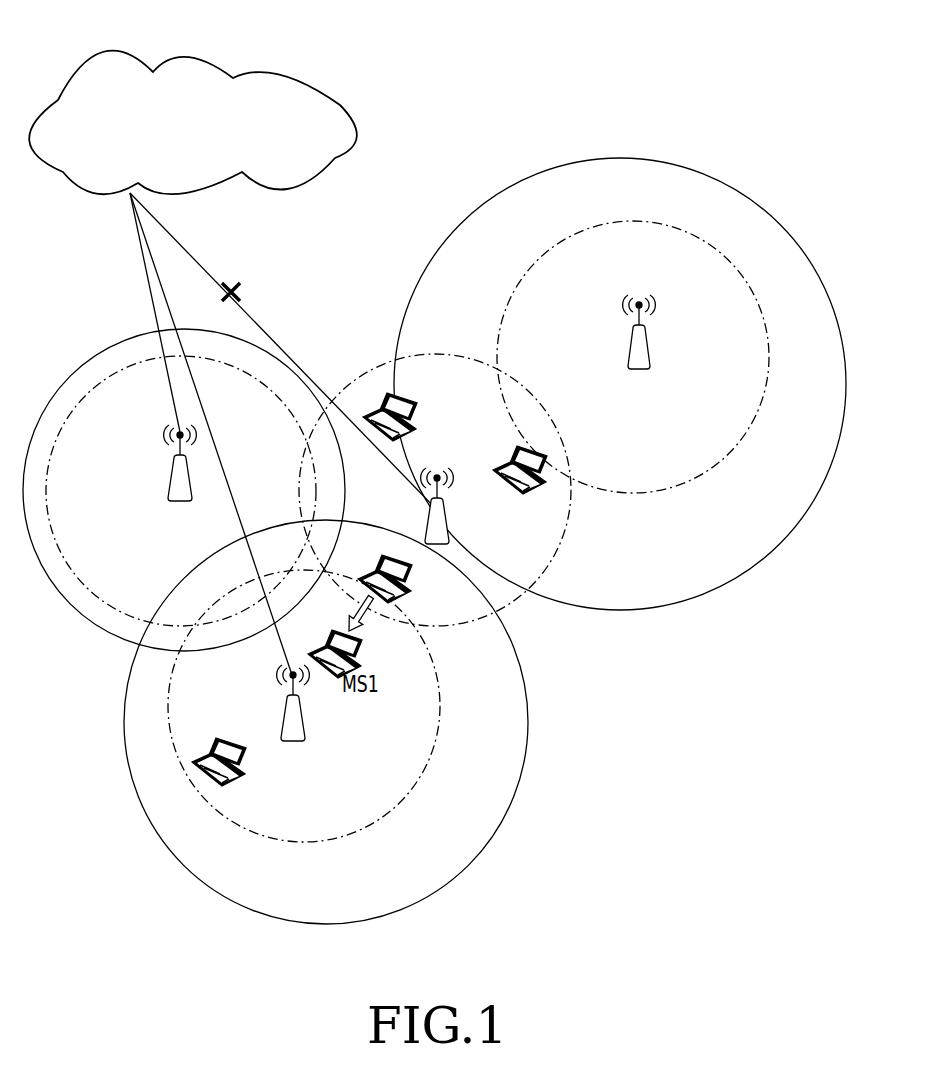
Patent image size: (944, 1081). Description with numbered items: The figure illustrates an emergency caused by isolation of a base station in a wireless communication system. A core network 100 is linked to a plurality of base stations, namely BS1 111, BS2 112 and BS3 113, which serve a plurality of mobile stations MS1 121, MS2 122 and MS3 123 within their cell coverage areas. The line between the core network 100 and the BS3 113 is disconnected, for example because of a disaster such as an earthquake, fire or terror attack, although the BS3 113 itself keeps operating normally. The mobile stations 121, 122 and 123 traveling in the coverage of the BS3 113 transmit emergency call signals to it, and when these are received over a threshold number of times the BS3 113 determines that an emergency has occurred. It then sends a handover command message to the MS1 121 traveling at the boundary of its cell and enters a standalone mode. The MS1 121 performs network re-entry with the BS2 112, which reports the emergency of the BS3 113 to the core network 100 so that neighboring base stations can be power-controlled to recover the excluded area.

The core network 100 is at (208, 48).
The base station BS1 111 is at (168, 478).
The base station BS2 112 is at (283, 716).
The base station BS3 113 is at (448, 517).
The mobile station MS1 121 is at (393, 558).
The mobile station MS2 122 is at (403, 394).
The mobile station MS3 123 is at (538, 452).